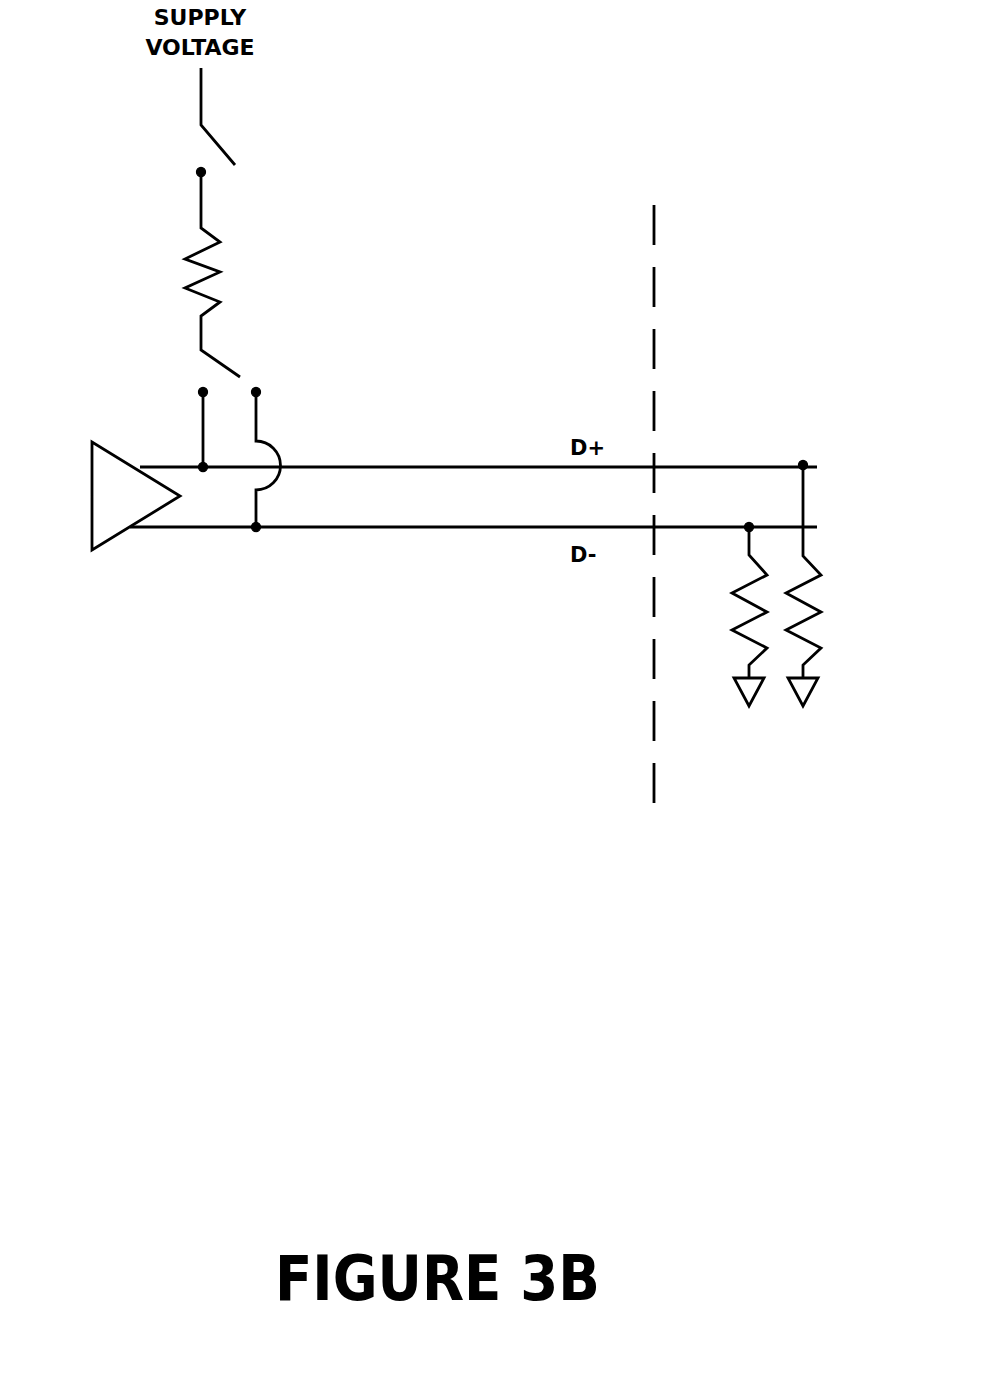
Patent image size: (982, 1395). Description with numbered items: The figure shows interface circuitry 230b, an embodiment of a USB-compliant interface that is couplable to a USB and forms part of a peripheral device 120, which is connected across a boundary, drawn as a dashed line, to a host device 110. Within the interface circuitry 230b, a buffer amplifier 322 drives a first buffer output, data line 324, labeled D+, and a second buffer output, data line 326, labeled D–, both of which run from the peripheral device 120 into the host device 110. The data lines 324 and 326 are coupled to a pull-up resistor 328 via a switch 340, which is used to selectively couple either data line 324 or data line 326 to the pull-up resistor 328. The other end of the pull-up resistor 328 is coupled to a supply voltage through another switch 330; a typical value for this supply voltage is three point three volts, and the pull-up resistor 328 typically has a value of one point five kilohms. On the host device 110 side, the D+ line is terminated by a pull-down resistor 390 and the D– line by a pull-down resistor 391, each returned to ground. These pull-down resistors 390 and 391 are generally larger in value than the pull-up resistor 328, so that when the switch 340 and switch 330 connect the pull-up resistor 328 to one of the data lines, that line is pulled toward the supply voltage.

The switch 330 is at (170, 173).
The pull-up resistor 328 is at (188, 274).
The switch 340 is at (180, 430).
The buffer amplifier 322 is at (136, 496).
The first buffer output (data line) 324 is at (436, 450).
The second buffer output (data line) 326 is at (436, 544).
The interface circuitry 230b is at (398, 279).
The peripheral device 120 is at (572, 512).
The host device 110 is at (755, 641).
The pull-down resistor 391 is at (725, 616).
The pull-down resistor 390 is at (832, 585).